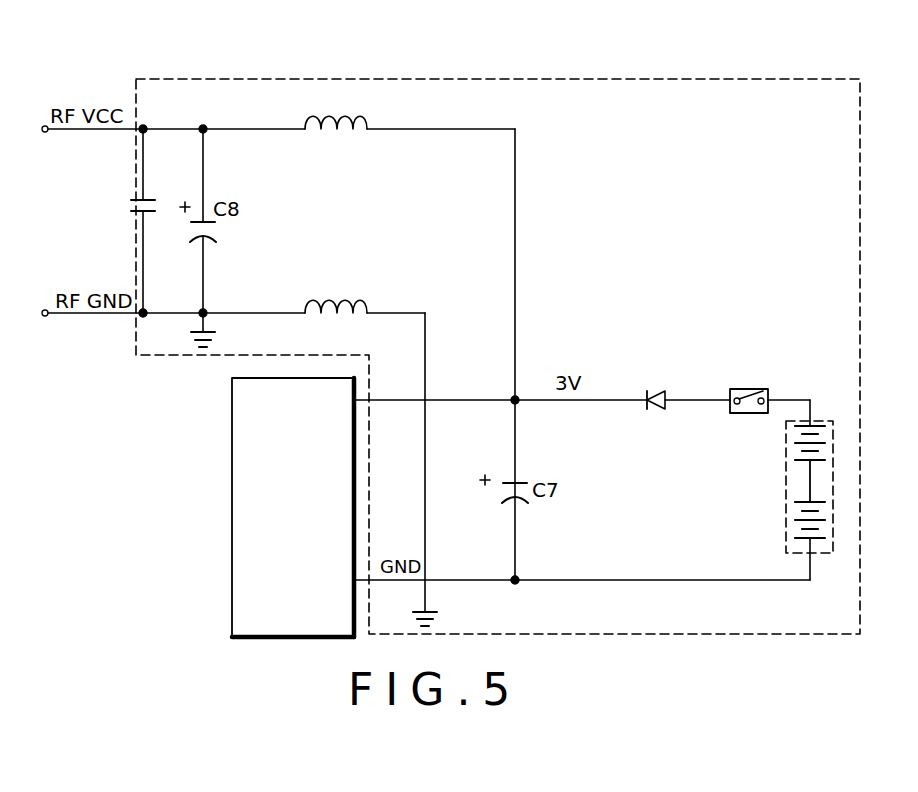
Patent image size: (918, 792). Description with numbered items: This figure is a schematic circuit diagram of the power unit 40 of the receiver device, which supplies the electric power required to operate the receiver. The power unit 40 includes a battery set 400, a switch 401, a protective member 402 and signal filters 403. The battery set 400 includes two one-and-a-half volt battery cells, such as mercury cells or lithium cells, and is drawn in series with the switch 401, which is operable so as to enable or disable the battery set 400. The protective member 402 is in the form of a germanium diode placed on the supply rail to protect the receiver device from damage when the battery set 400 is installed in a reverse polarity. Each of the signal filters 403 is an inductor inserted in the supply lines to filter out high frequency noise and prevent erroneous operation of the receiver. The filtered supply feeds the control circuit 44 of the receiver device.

The power unit 40 is at (549, 93).
The signal filters 403 is at (362, 286).
The protective member 402 is at (652, 392).
The switch 401 is at (745, 413).
The battery set 400 is at (793, 478).
The control circuit 44 is at (250, 598).